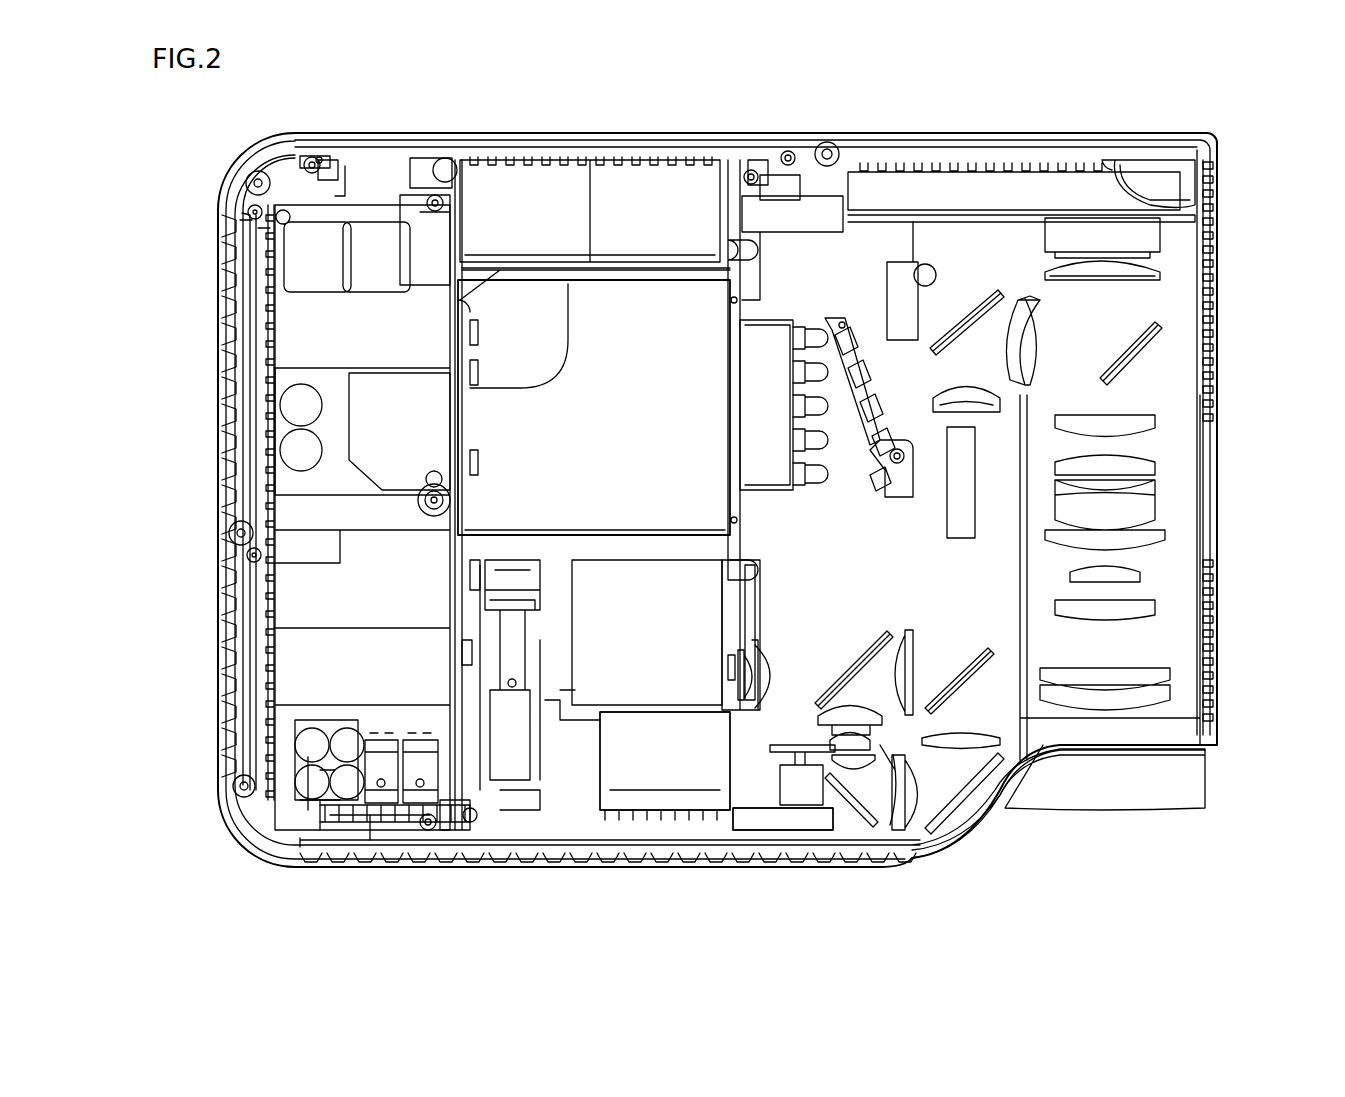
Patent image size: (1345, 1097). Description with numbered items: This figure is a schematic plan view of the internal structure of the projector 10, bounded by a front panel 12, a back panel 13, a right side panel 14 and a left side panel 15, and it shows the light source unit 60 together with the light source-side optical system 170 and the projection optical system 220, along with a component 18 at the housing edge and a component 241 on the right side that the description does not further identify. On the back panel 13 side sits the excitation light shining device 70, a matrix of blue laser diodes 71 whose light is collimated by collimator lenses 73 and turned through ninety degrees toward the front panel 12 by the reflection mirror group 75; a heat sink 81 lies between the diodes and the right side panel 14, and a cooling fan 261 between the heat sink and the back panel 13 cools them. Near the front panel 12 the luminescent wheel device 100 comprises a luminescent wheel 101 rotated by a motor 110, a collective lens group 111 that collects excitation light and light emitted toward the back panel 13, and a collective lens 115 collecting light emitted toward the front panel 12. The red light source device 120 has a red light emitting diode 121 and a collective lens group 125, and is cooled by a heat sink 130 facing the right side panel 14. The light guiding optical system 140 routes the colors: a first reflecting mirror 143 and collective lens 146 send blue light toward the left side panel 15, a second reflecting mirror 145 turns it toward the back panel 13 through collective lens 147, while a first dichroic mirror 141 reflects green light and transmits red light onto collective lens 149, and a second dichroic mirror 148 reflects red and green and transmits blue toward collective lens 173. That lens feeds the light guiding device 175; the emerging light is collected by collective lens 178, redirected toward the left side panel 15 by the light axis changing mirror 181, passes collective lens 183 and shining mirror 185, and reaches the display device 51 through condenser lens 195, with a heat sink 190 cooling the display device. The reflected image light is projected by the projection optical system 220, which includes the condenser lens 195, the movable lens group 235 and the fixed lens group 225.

The projector 10 is at (1232, 125).
The front panel 12 is at (375, 853).
The back panel 13 is at (580, 133).
The right side panel 14 is at (235, 352).
The left side panel 15 is at (1217, 672).
The right side intake port 18 is at (1210, 158).
The display device 51 is at (1140, 250).
The light source unit 60 is at (280, 455).
The excitation light shining device 70 is at (767, 276).
The blue laser diode 71 is at (800, 405).
The collimator lens 73 is at (800, 372).
The reflection mirror group 75 is at (849, 415).
The heat sink 81 is at (630, 365).
The luminescent wheel device 100 is at (805, 807).
The luminescent wheel 101 is at (712, 705).
The motor 110 is at (752, 818).
The collective lens group 111 is at (880, 772).
The collective lens 115 is at (905, 795).
The red light source device 120 is at (622, 770).
The red light emitting diode 121 is at (725, 675).
The collective lens group 125 is at (736, 645).
The heat sink 130 is at (605, 632).
The light guiding optical system 140 is at (1010, 755).
The first dichroic mirror 141 is at (840, 660).
The first reflecting mirror 143 is at (855, 752).
The second reflecting mirror 145 is at (965, 742).
The collective lens 146 is at (895, 765).
The collective lens 147 is at (1003, 760).
The second dichroic mirror 148 is at (958, 695).
The collective lens 149 is at (905, 632).
The light source-side optical system 170 is at (988, 268).
The collective lens 173 is at (1100, 575).
The light guiding device 175 is at (975, 545).
The collective lens 178 is at (960, 390).
The light axis changing mirror 181 is at (965, 312).
The collective lens 183 is at (1040, 318).
The shining mirror 185 is at (1130, 355).
The heat sink 190 is at (1068, 180).
The condenser lens 195 is at (1140, 272).
The projection optical system 220 is at (1179, 505).
The fixed lens group 225 is at (1148, 700).
The movable lens group 235 is at (1179, 453).
The power supply board 241 is at (340, 575).
The cooling fan 261 is at (483, 205).